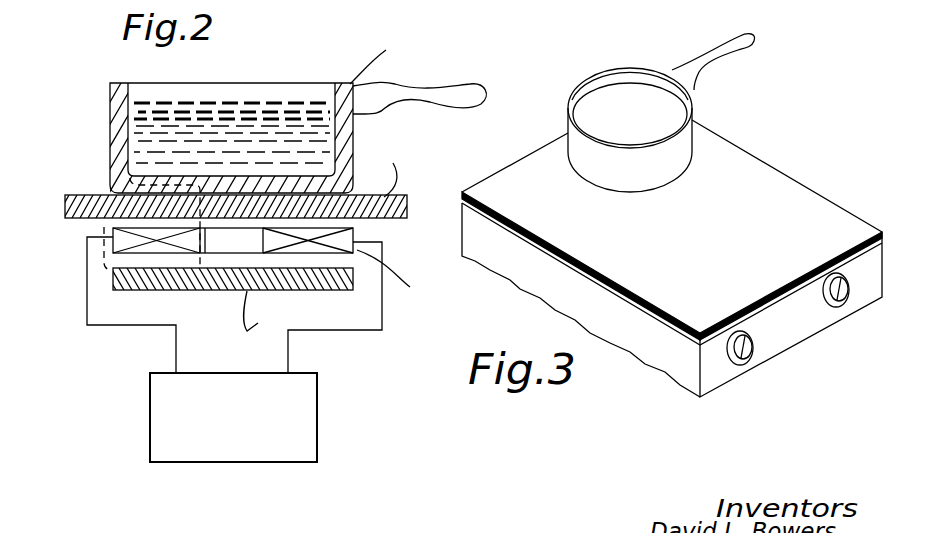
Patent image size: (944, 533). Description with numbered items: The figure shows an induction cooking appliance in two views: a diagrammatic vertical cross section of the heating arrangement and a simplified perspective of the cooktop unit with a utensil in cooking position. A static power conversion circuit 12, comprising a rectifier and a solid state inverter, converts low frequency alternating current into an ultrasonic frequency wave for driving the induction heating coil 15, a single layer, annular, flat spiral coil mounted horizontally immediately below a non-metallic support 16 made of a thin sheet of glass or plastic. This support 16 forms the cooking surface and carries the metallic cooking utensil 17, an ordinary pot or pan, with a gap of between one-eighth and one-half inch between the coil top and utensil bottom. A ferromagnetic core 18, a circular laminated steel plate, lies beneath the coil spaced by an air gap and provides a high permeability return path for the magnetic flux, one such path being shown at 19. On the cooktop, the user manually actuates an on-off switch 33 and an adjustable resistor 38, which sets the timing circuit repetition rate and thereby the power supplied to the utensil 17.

In FIG. 2, the static power conversion circuit 12 is at (150, 398).
In FIG. 2, the induction heating coil 15 is at (112, 238).
In FIG. 2, the non-metallic support 16 is at (63, 215).
In FIG. 3, the non-metallic support 16 is at (810, 198).
In FIG. 2, the cooking utensil 17 is at (110, 135).
In FIG. 3, the cooking utensil 17 is at (693, 135).
In FIG. 2, the ferromagnetic core 18 is at (231, 291).
In FIG. 2, the magnetic flux return path 19 is at (107, 253).
In FIG. 3, the on-off switch 33 is at (736, 366).
In FIG. 3, the adjustable resistor 38 is at (837, 307).